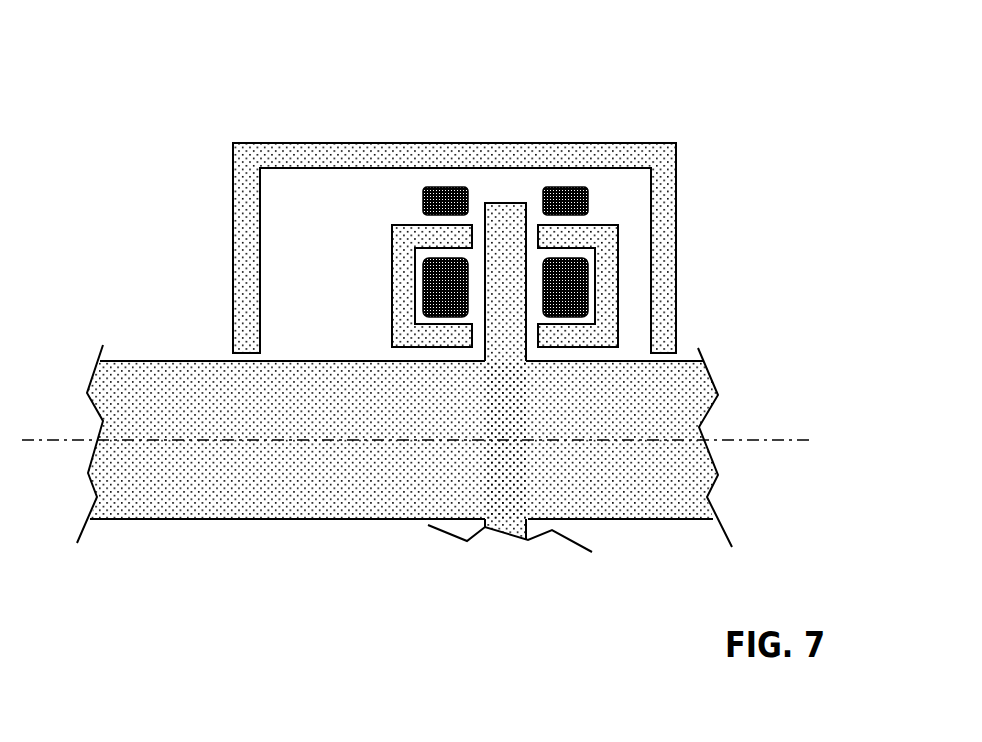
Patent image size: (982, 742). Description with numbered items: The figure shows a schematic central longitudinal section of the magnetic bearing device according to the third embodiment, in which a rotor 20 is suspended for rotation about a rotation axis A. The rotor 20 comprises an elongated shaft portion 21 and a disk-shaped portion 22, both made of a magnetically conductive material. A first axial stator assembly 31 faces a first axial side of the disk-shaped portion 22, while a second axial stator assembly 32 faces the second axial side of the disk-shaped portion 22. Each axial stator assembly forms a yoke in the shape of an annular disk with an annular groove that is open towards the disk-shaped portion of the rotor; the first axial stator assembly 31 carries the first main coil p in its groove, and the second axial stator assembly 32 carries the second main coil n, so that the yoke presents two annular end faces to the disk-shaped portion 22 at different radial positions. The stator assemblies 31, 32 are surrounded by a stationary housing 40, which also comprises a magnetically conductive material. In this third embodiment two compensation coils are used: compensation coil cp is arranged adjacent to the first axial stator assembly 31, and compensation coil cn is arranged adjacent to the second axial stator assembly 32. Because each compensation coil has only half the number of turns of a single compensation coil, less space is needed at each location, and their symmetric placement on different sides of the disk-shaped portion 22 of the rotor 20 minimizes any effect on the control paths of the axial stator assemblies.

The rotor 20 is at (417, 316).
The elongated shaft portion 21 is at (182, 383).
The disk-shaped portion 22 is at (503, 228).
The first axial stator assembly 31 is at (610, 242).
The second axial stator assembly 32 is at (395, 307).
The housing 40 is at (651, 162).
The compensation coil cn is at (429, 187).
The compensation coil cp is at (562, 195).
The second main coil n is at (438, 293).
The first main coil p is at (570, 278).
The rotation axis A is at (743, 440).